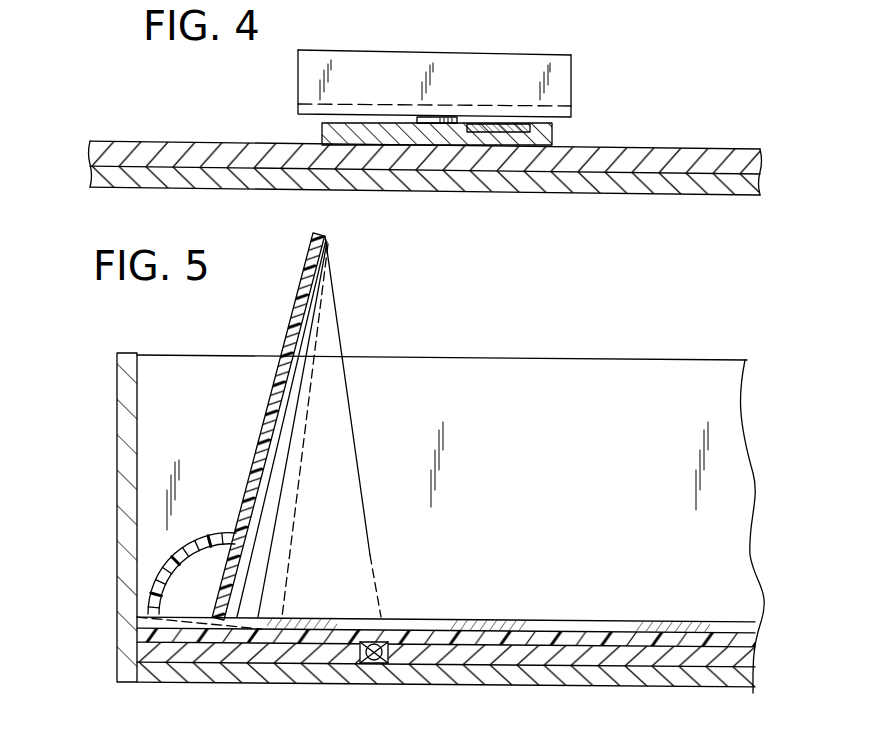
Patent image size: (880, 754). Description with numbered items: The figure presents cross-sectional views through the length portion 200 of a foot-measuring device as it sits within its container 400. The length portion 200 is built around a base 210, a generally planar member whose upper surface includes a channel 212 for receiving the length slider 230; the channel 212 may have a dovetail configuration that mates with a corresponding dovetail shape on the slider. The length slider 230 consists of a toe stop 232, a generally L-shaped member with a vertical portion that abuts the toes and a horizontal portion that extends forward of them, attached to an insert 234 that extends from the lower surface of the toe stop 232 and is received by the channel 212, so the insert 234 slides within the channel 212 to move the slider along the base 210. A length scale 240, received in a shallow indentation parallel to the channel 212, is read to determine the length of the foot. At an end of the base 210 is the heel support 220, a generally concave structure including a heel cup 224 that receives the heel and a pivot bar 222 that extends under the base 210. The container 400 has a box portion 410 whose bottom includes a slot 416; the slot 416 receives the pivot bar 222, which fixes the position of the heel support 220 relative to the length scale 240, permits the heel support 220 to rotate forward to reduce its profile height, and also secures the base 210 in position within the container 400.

In FIG. 4, the length portion 200 is at (433, 124).
In FIG. 5, the length portion 200 is at (495, 600).
In FIG. 4, the base 210 is at (551, 143).
In FIG. 5, the base 210 is at (613, 629).
In FIG. 4, the channel 212 is at (420, 132).
In FIG. 5, the heel support 220 is at (264, 426).
In FIG. 5, the pivot bar 222 is at (373, 663).
In FIG. 5, the heel cup 224 is at (293, 310).
In FIG. 4, the length slider 230 is at (298, 72).
In FIG. 4, the toe stop 232 is at (472, 52).
In FIG. 4, the insert 234 is at (440, 130).
In FIG. 4, the length scale 240 is at (513, 125).
In FIG. 4, the container 400 is at (703, 208).
In FIG. 5, the container 400 is at (566, 700).
In FIG. 5, the box portion 410 is at (117, 627).
In FIG. 5, the slot 416 is at (377, 644).